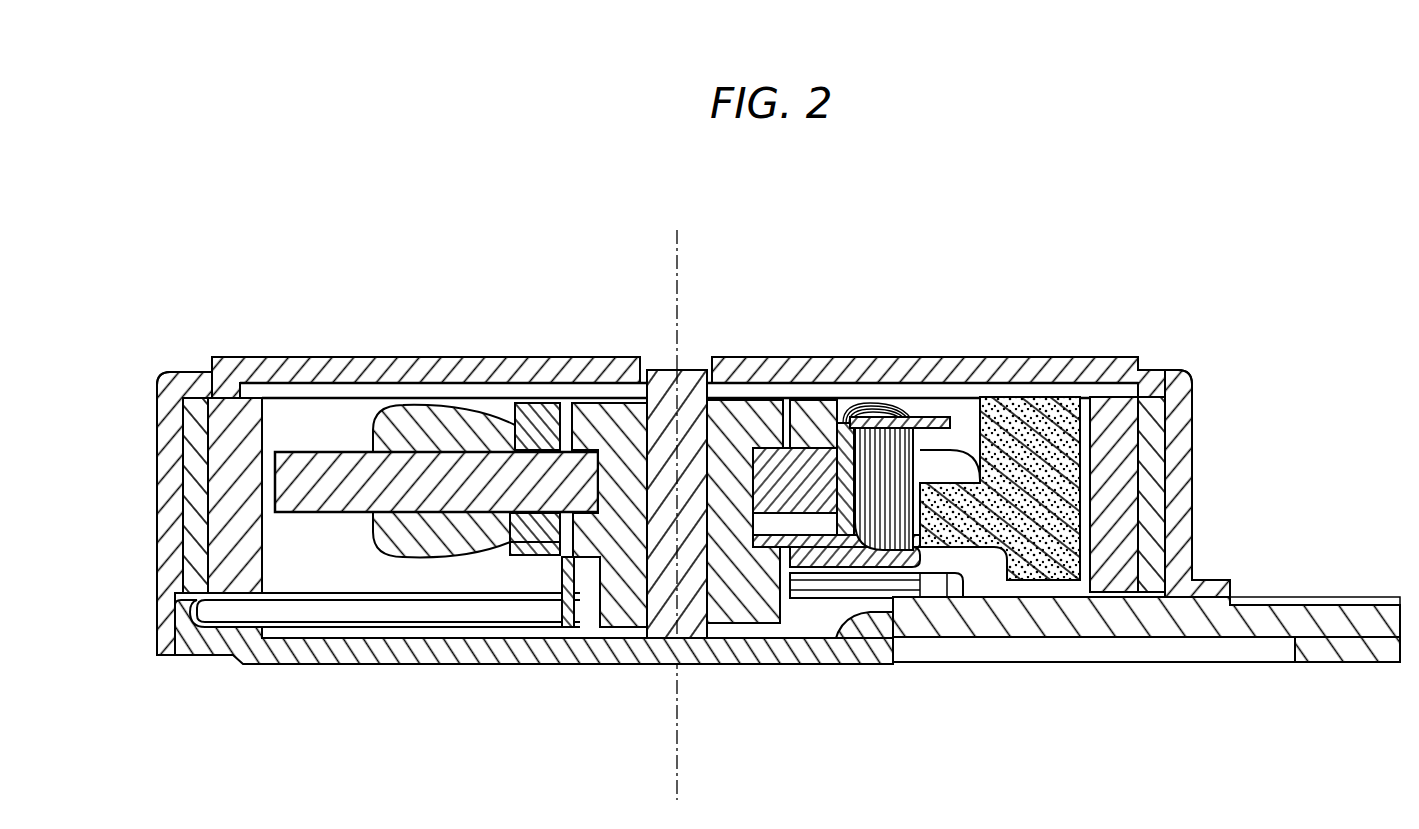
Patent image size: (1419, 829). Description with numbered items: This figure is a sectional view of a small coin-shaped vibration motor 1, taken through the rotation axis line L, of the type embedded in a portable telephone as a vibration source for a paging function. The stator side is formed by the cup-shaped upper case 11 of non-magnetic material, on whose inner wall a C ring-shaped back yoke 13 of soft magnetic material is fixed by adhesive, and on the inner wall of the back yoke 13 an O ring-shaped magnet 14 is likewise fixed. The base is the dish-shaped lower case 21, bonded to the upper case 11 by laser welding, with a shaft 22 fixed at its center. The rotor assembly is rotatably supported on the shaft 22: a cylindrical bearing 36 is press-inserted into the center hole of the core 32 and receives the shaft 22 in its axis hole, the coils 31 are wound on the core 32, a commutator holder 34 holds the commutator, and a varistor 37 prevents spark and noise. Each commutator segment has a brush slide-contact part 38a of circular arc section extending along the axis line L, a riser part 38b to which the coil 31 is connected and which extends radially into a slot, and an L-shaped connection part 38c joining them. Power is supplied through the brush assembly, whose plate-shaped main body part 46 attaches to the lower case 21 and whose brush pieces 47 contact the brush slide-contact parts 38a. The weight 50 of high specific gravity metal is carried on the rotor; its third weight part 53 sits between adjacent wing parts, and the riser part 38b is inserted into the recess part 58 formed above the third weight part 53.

The vibration motor 1 is at (1130, 224).
The upper case 11 is at (1192, 508).
The back yoke 13 is at (1150, 432).
The magnet 14 is at (1113, 412).
The lower case 21 is at (470, 645).
The shaft 22 is at (695, 640).
The coils 31 is at (443, 412).
The core 32 is at (310, 458).
The commutator holder 34 is at (583, 628).
The bearing 36 is at (622, 415).
The varistor 37 is at (537, 410).
The brush slide-contact part 38a is at (780, 640).
The riser part 38b is at (883, 420).
The connection part 38c is at (816, 545).
The main body part 46 is at (1155, 632).
The brush pieces 47 is at (872, 596).
The weight 50 is at (1067, 582).
The third weight part 53 is at (963, 540).
The recess part 58 is at (960, 412).
The rotation axis line L is at (681, 290).